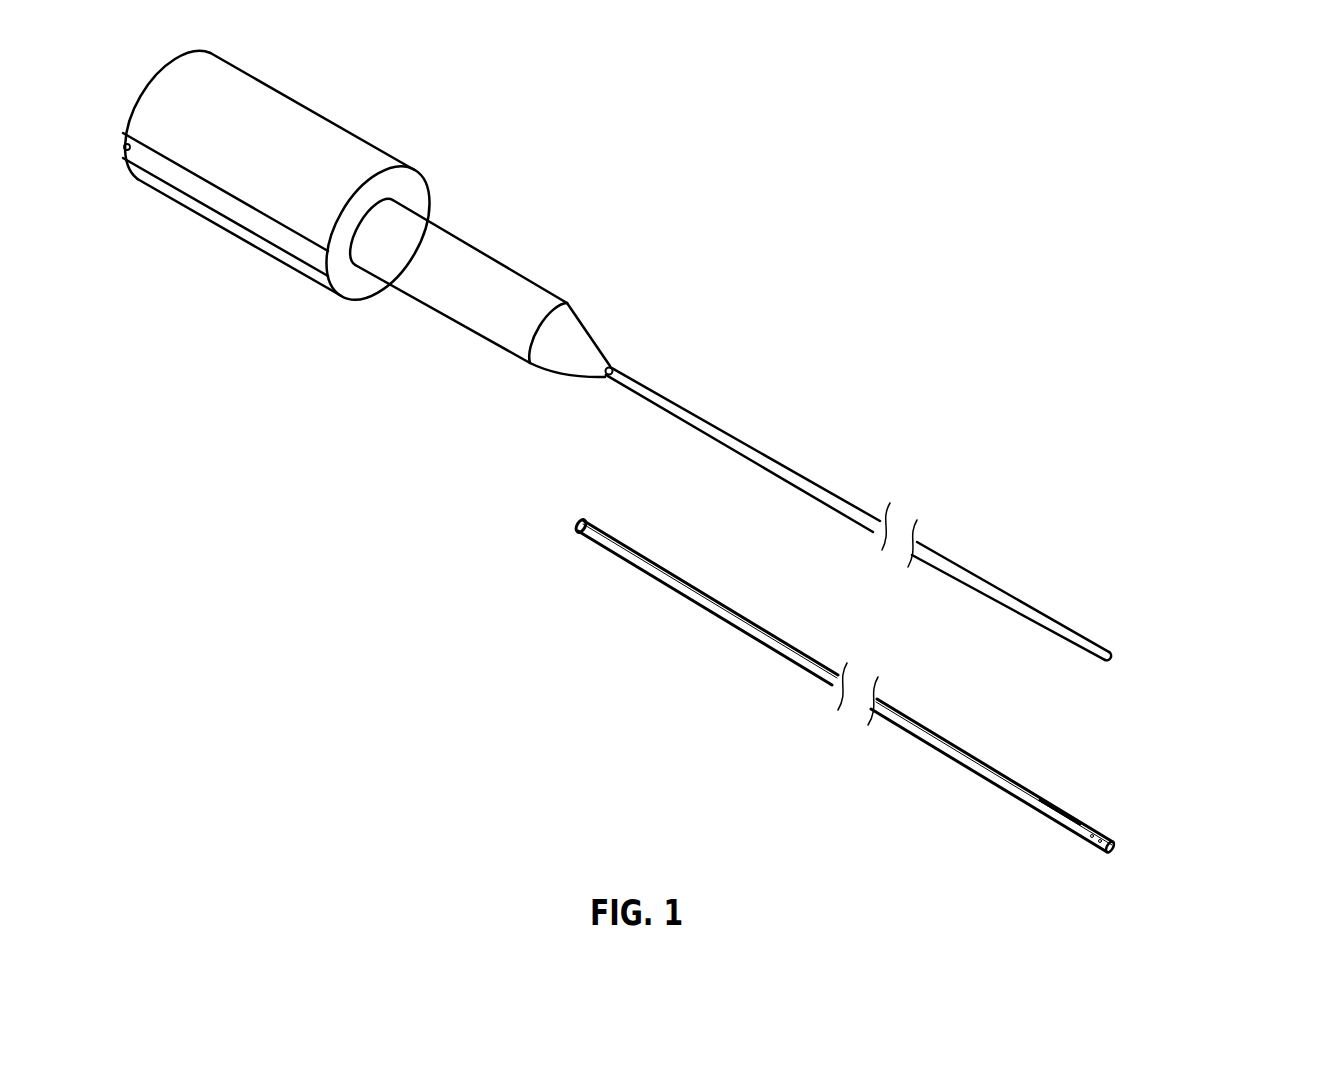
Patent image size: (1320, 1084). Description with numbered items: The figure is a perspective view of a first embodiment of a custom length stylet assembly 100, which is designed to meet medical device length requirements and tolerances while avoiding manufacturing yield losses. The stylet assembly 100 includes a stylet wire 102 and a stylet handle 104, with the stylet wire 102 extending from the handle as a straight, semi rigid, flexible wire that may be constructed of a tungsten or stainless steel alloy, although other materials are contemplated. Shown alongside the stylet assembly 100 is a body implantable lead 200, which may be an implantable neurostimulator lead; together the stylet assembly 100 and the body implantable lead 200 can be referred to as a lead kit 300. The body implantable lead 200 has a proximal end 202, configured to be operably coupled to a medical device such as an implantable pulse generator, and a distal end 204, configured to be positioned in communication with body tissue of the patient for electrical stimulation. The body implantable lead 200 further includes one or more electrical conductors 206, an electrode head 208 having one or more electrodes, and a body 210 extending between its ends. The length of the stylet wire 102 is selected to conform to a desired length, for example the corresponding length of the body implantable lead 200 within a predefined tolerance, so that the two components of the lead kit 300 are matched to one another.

The stylet assembly 100 is at (738, 322).
The stylet wire 102 is at (793, 467).
The stylet handle 104 is at (372, 140).
The body implantable lead 200 is at (725, 682).
The proximal end 202 is at (568, 532).
The distal end 204 is at (1117, 852).
The electrical conductors 206 is at (1052, 800).
The electrode head 208 is at (1105, 837).
The body 210 is at (790, 642).
The lead kit 300 is at (1165, 545).